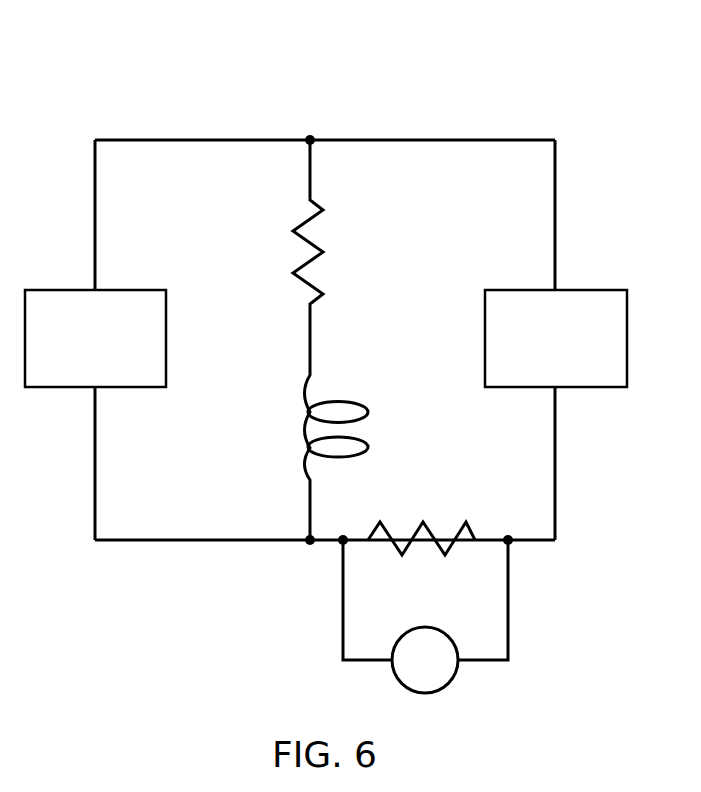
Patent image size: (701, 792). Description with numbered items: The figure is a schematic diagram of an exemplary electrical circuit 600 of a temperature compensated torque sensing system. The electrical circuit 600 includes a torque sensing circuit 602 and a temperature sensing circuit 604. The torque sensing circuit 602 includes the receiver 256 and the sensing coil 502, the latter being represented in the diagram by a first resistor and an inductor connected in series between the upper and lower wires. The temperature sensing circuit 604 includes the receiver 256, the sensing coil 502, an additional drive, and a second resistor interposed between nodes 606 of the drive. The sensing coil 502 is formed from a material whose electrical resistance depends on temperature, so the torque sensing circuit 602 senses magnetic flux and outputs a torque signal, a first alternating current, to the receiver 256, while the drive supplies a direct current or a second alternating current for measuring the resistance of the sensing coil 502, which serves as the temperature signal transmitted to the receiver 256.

The electrical circuit 600 is at (531, 79).
The sensing coil 502 is at (311, 178).
The receiver 256 is at (74, 353).
The torque sensing circuit 602 is at (214, 353).
The temperature sensing circuit 604 is at (389, 353).
The nodes 606 is at (341, 547).